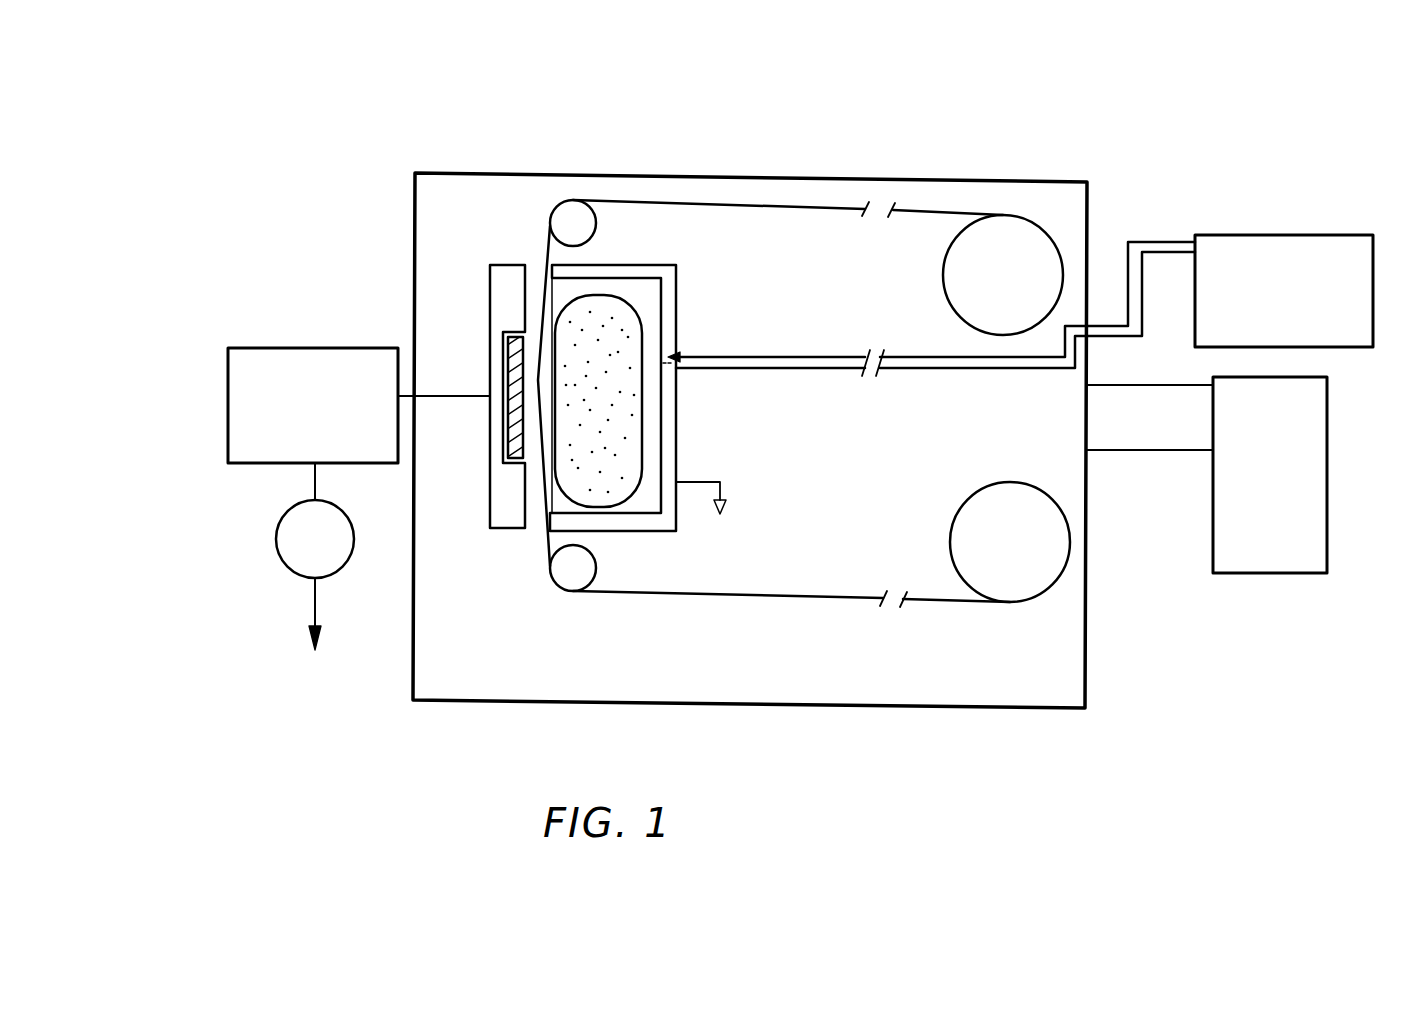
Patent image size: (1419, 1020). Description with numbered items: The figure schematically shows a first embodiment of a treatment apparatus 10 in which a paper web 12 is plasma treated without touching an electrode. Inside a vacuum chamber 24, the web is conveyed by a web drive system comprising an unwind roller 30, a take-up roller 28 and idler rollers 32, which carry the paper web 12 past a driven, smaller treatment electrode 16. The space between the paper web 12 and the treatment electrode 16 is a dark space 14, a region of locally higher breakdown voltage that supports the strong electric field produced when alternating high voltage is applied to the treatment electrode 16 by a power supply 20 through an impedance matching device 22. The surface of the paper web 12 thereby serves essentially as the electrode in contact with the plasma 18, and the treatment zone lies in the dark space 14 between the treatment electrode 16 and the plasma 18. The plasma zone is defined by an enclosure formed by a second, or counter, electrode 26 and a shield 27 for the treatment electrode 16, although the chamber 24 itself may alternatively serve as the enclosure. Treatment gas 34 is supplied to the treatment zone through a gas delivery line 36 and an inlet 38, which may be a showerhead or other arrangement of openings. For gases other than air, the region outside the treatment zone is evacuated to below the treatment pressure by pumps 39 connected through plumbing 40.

The treatment apparatus 10 is at (998, 148).
The paper web 12 is at (538, 303).
The dark space 14 is at (527, 340).
The treatment electrode 16 is at (513, 357).
The plasma 18 is at (632, 415).
The power supply 20 is at (283, 517).
The impedance matching device 22 is at (275, 348).
The chamber 24 is at (904, 720).
The second electrode 26 is at (678, 280).
The shield 27 is at (500, 528).
The take-up roller 28 is at (952, 530).
The unwind roller 30 is at (945, 270).
The idler rollers 32 is at (596, 226).
The treatment gas 34 is at (1222, 236).
The gas delivery line 36 is at (742, 369).
The inlet 38 is at (676, 355).
The pumps 39 is at (1330, 413).
The plumbing 40 is at (1150, 436).